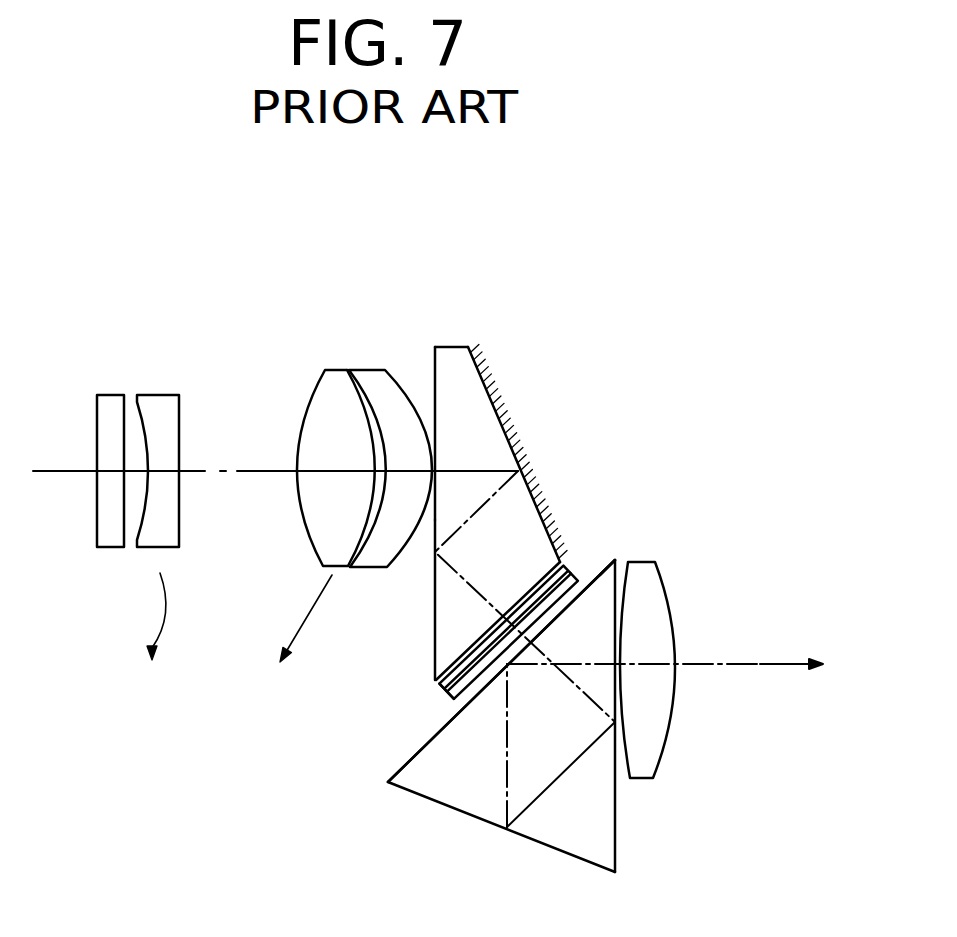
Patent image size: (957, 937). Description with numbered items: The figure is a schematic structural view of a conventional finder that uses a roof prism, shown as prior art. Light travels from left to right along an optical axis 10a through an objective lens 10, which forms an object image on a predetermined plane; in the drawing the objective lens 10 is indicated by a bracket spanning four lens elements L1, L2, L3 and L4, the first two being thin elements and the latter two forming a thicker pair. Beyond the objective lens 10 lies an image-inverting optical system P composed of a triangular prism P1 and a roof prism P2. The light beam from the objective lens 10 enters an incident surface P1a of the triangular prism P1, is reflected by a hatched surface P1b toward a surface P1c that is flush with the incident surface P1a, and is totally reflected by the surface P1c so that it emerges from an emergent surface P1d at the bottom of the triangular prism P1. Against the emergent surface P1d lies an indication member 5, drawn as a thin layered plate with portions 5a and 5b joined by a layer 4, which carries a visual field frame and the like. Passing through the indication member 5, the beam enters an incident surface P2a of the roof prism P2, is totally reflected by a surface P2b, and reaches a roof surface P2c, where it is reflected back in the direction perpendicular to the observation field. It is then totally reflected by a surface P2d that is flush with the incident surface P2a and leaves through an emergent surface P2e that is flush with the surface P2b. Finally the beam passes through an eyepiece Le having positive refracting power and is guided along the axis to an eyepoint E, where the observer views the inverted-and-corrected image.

The objective lens 10 is at (390, 254).
The optical axis 10a is at (78, 474).
The first lens L1 is at (108, 390).
The second lens L2 is at (156, 390).
The third lens L3 is at (323, 370).
The fourth lens L4 is at (368, 372).
The image-inverting optical system P is at (507, 328).
The triangular prism P1 is at (487, 487).
The incident surface P1a is at (434, 364).
The surface P1b is at (510, 418).
The surface P1c is at (434, 606).
The emergent surface P1d is at (436, 682).
The indication member 5 is at (548, 559).
The first plate 5a is at (567, 562).
The second plate 5b is at (578, 572).
The adhesive layer 4 is at (442, 697).
The roof prism P2 is at (500, 676).
The incident surface P2a is at (408, 763).
The surface P2d is at (443, 696).
The surface P2b is at (618, 814).
The roof surface P2c is at (562, 851).
The emergent surface P2e is at (617, 558).
The eyepiece Le is at (660, 562).
The eyepoint E is at (803, 655).